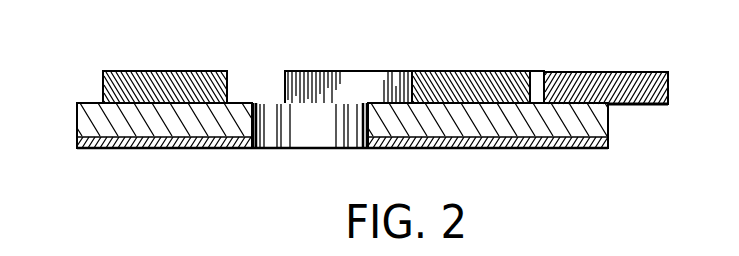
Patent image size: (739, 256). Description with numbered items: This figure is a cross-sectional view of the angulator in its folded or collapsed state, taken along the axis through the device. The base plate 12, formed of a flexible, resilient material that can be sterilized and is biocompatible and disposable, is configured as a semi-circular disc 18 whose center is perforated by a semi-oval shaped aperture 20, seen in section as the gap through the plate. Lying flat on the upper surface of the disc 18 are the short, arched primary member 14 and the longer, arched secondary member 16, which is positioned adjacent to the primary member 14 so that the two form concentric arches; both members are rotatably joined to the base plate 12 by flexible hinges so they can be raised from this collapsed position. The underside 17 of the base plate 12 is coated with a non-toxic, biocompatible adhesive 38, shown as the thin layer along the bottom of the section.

The base plate 12 is at (190, 123).
The primary member 14 is at (162, 82).
The secondary member 16 is at (640, 81).
The underside 17 is at (96, 134).
The semi-circular disc 18 is at (237, 103).
The aperture 20 is at (360, 118).
The adhesive 38 is at (115, 150).